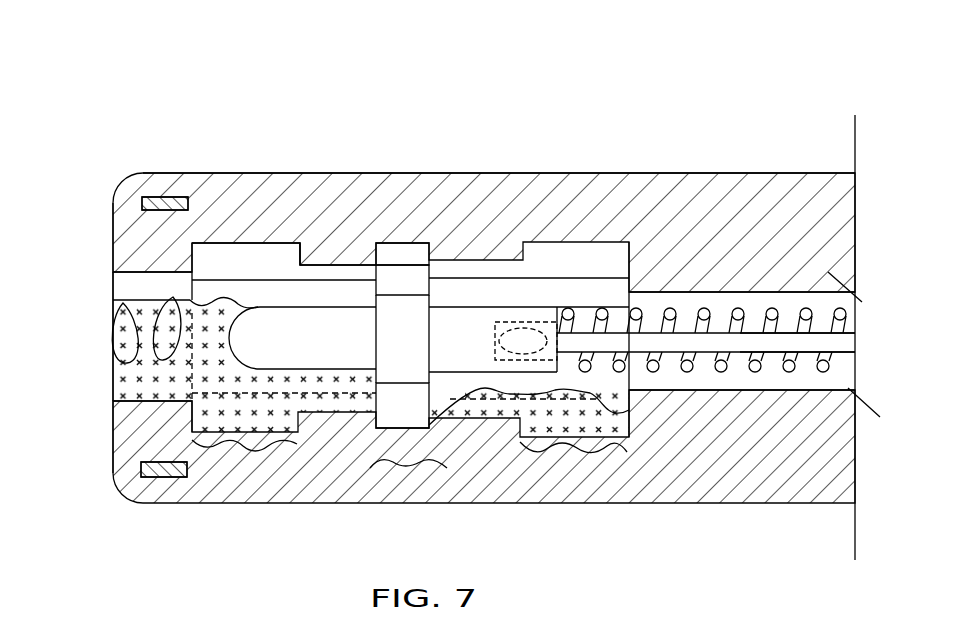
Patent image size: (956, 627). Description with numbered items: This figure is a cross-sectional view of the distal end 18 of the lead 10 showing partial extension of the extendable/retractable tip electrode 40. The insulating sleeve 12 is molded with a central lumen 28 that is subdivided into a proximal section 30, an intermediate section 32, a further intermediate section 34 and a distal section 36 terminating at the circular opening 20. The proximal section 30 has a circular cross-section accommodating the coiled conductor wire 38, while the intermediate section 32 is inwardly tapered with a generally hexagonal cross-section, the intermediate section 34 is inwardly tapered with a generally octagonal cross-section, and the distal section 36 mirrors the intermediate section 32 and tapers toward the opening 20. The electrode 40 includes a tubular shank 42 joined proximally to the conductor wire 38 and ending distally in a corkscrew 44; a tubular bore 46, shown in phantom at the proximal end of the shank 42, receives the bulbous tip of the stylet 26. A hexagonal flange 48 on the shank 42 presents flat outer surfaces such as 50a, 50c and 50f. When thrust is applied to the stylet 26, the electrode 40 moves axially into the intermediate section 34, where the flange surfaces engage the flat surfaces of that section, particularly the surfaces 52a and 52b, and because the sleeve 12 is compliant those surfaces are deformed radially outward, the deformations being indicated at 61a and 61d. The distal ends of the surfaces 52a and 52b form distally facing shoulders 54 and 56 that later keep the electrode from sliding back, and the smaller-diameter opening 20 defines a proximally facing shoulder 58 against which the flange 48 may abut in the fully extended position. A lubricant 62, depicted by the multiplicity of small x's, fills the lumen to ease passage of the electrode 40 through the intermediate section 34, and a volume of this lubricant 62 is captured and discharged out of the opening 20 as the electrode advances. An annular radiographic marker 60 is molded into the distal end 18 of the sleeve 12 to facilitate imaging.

The lead 10 is at (707, 72).
The insulating sleeve 12 is at (787, 173).
The distal end 18 is at (604, 177).
The opening 20 is at (123, 286).
The stylet 26 is at (810, 383).
The lumen 28 is at (807, 302).
The proximal section 30 is at (740, 342).
The intermediate section 32 is at (577, 448).
The intermediate section 34 is at (420, 462).
The distal section 36 is at (243, 446).
The coiled conductor wire 38 is at (703, 307).
The tip electrode 40 is at (263, 305).
The tubular shank 42 is at (455, 255).
The corkscrew 44 is at (93, 319).
The tubular bore 46 is at (530, 325).
The flange 48 is at (395, 262).
The flat outer surface 50a is at (440, 264).
The flat outer surface 50c is at (397, 398).
The flat outer surface 50f is at (422, 327).
The flat surface 52a is at (346, 265).
The flat surface 52b is at (465, 418).
The distally facing shoulder 54 is at (300, 260).
The distally facing shoulder 56 is at (375, 472).
The proximally facing shoulder 58 is at (212, 300).
The annular radiographic marker 60 is at (165, 472).
The outward deformation 61a is at (420, 267).
The outward deformation 61d is at (400, 452).
The lubricant 62 is at (200, 285).